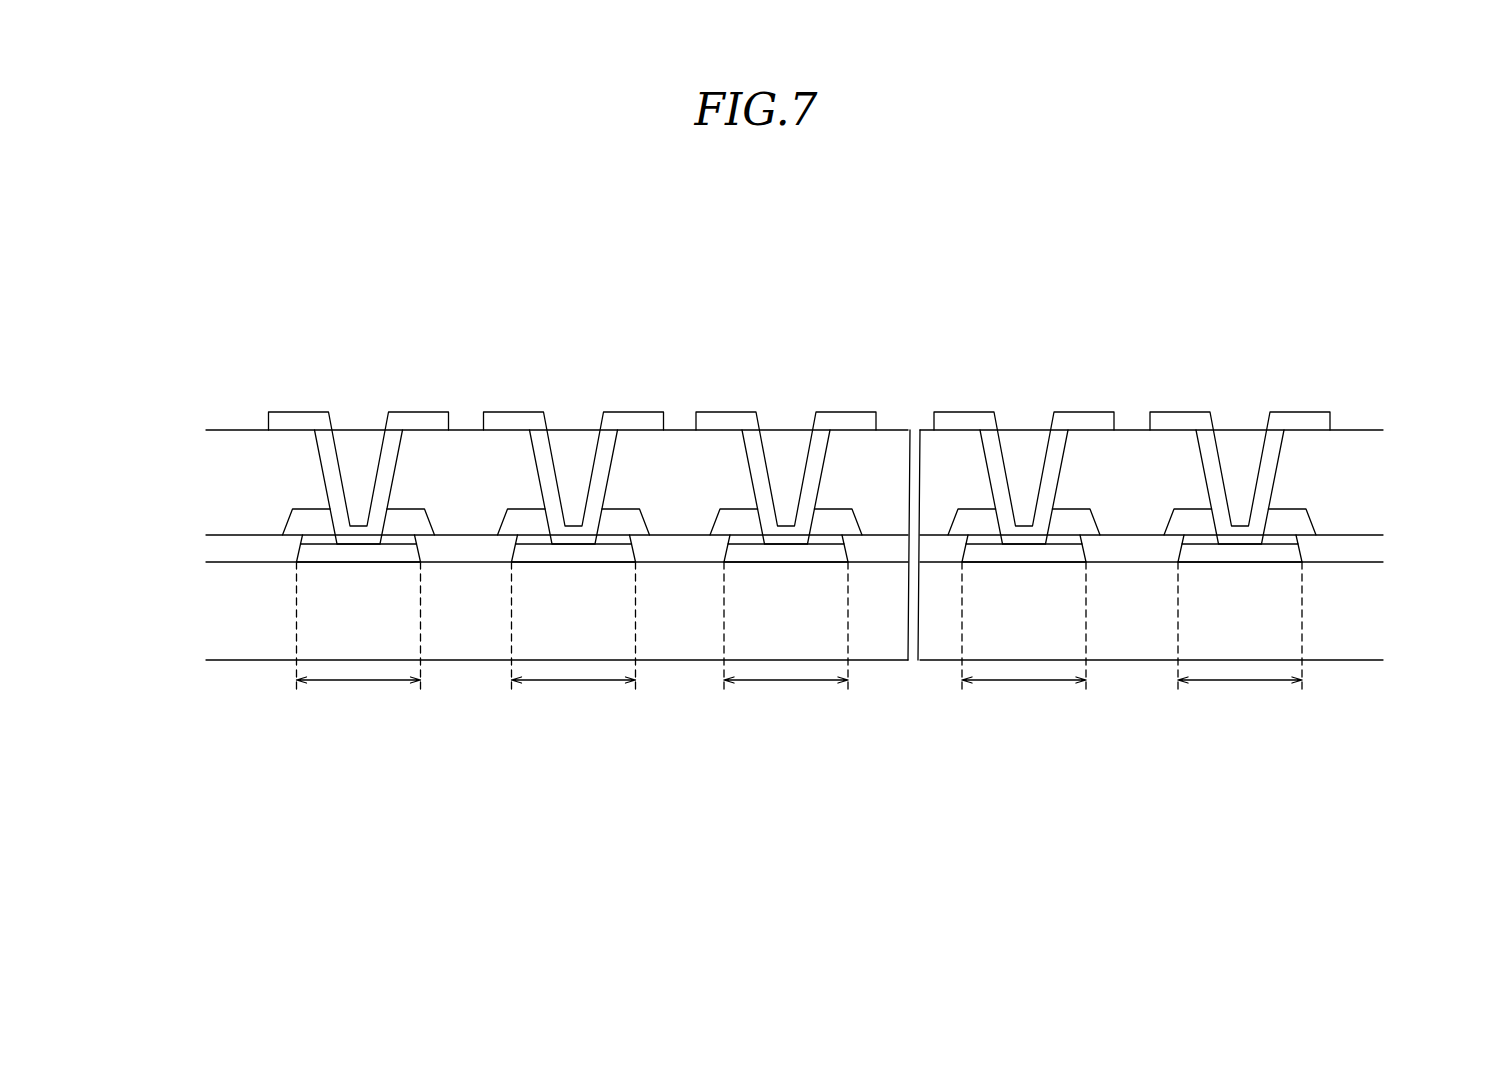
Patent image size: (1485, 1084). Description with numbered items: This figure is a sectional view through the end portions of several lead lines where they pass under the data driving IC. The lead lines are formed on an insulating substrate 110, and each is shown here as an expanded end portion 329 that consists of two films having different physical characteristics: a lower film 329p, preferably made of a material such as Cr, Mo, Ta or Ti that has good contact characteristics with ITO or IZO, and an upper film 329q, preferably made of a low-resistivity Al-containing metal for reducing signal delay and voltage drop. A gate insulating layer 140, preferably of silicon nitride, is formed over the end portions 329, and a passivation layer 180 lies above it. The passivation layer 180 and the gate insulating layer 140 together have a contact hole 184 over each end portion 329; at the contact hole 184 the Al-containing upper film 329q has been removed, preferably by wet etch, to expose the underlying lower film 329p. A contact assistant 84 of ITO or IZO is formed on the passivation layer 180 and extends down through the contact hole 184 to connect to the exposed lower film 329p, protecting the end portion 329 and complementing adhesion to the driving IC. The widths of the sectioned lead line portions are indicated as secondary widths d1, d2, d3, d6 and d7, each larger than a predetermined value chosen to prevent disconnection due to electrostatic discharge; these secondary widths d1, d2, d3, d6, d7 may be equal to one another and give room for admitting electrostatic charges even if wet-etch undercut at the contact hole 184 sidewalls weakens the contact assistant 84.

The contact assistant 84 is at (292, 418).
The contact hole 184 is at (358, 425).
The passivation layer 180 is at (799, 443).
The gate insulating layer 140 is at (238, 550).
The insulating substrate 110 is at (238, 620).
The end portion of lead line 329 is at (752, 659).
The lower film of end portion 329p is at (323, 553).
The upper film of end portion 329q is at (315, 541).
The secondary width d1 is at (359, 635).
The secondary width d2 is at (574, 635).
The secondary width d3 is at (786, 635).
The secondary width d6 is at (1024, 635).
The secondary width d7 is at (1240, 635).